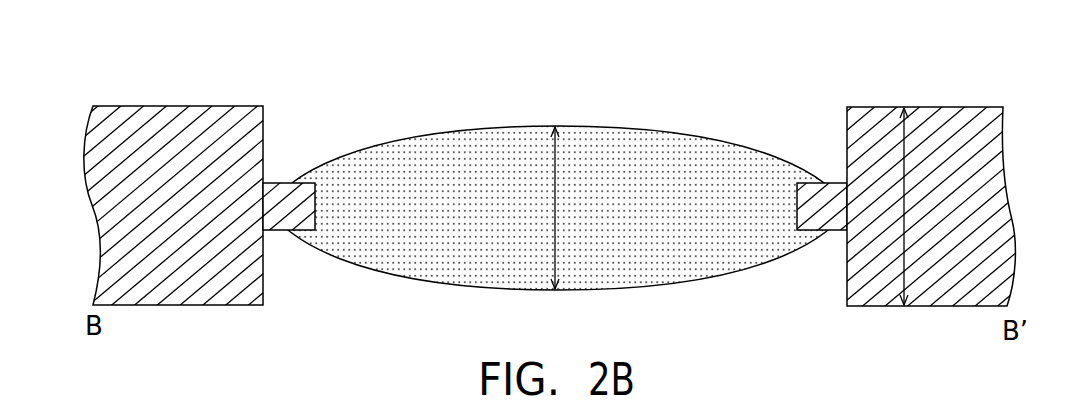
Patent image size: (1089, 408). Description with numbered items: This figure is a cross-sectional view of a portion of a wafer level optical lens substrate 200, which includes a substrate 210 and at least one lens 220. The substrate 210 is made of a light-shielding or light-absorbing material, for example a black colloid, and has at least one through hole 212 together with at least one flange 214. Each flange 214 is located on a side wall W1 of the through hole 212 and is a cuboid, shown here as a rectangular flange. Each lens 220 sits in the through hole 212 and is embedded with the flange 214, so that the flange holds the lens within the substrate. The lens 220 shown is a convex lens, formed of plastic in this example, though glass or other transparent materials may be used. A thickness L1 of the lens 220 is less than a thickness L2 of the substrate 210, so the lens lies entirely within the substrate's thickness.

The wafer level optical lens substrate 200 is at (1071, 386).
The substrate 210 is at (965, 132).
The through hole 212 is at (525, 122).
The flange 214 is at (283, 200).
The lens 220 is at (728, 165).
The thickness of the lens L1 is at (540, 208).
The thickness of the substrate L2 is at (890, 206).
The side wall W1 is at (275, 269).